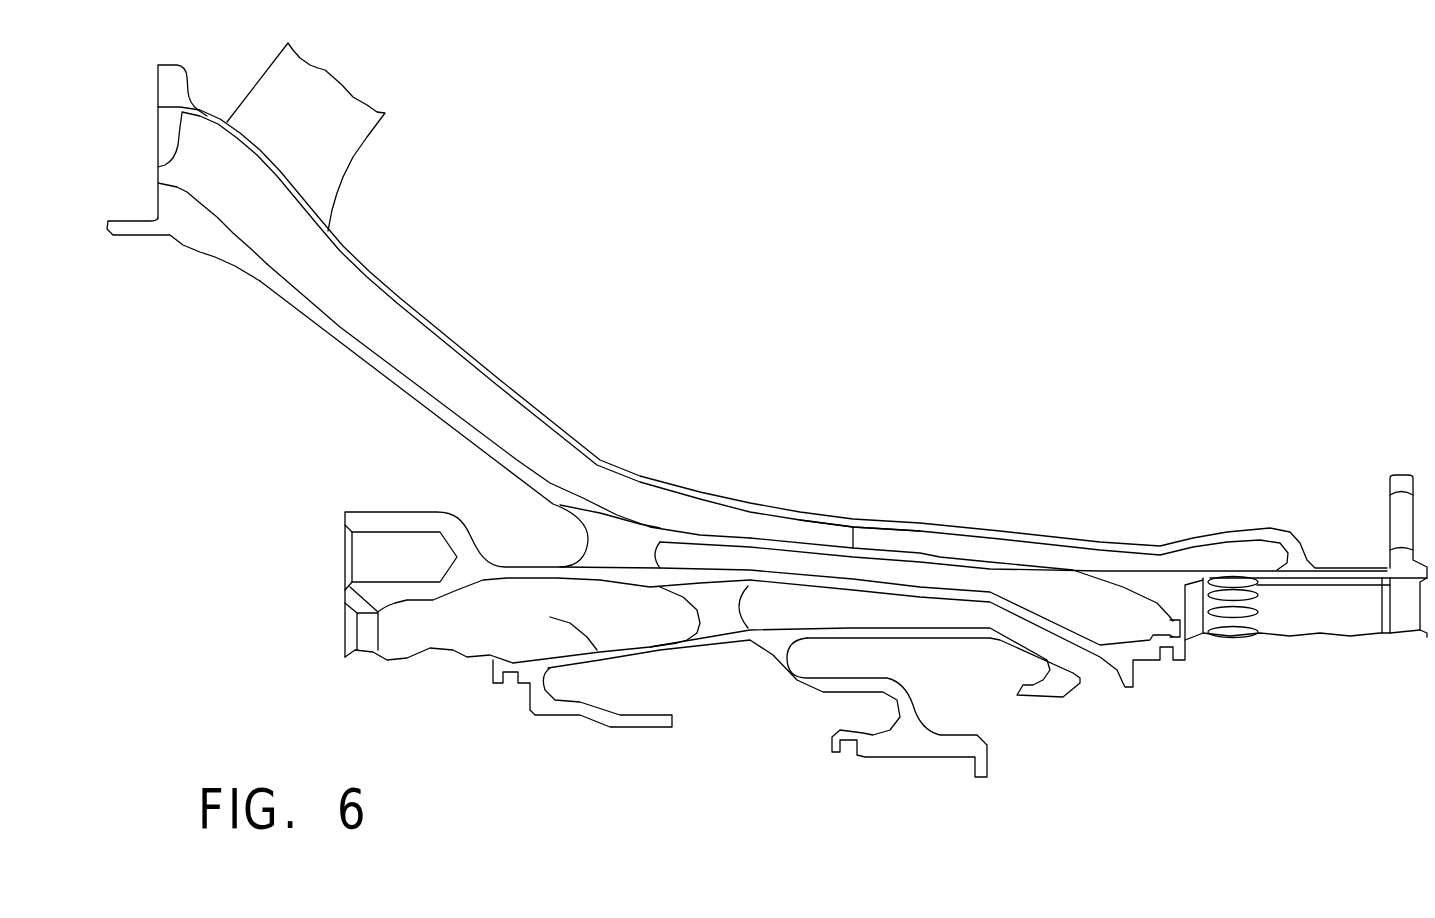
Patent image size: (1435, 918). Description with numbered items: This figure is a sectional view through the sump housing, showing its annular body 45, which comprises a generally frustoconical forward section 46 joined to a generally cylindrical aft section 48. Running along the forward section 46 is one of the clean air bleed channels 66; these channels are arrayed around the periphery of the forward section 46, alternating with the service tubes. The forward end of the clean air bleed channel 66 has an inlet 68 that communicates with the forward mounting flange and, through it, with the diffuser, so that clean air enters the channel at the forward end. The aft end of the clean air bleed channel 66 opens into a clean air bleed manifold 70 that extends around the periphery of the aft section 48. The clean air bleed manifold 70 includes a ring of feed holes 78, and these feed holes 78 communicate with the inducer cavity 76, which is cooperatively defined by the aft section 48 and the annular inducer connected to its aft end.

The annular body 45 is at (620, 730).
The forward section 46 is at (318, 386).
The aft section 48 is at (903, 484).
The clean air bleed channel 66 is at (473, 357).
The inlet 68 is at (158, 167).
The clean air bleed manifold 70 is at (938, 518).
The inducer cavity 76 is at (1272, 701).
The feed holes 78 is at (1250, 580).